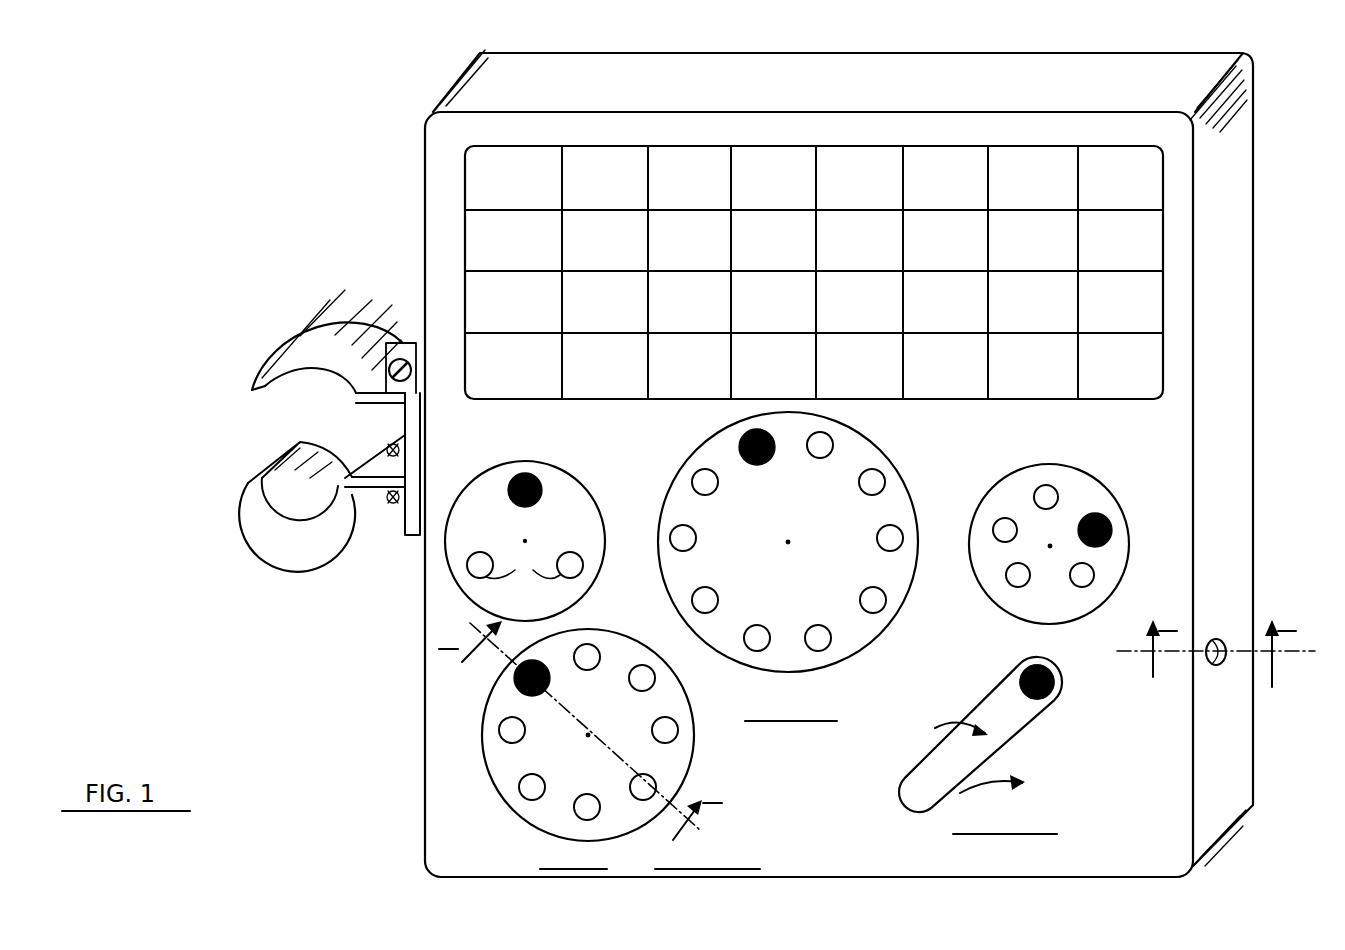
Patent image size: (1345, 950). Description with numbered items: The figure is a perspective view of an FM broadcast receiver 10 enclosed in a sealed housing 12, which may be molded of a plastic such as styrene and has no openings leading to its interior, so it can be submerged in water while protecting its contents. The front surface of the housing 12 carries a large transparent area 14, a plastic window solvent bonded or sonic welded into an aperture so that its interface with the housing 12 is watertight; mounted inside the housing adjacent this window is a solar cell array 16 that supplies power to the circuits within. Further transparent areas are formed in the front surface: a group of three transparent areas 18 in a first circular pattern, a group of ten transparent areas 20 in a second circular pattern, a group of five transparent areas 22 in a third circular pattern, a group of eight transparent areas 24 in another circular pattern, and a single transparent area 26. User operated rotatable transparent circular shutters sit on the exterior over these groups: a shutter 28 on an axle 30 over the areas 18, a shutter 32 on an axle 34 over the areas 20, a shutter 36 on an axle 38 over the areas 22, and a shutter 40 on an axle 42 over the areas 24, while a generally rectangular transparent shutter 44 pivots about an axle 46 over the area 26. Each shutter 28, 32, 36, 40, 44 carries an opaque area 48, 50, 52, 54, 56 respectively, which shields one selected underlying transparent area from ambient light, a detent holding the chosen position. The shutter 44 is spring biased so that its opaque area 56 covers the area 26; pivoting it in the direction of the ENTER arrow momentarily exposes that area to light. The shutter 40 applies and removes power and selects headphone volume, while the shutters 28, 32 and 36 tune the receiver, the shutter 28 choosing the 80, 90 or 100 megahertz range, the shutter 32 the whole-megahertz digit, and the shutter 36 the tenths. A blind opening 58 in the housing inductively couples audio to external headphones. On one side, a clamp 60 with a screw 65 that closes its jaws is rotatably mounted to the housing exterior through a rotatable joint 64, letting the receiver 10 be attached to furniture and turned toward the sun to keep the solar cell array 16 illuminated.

The receiver 10 is at (405, 805).
The housing 12 is at (1226, 68).
The transparent area 14 is at (466, 165).
The solar cell array 16 is at (1155, 246).
The transparent areas 18 is at (520, 508).
The transparent areas 20 is at (768, 480).
The transparent areas 22 is at (1040, 506).
The transparent areas 24 is at (598, 690).
The transparent area 26 is at (1052, 684).
The shutter 28 is at (588, 500).
The axle 30 is at (523, 540).
The shutter 32 is at (900, 516).
The axle 34 is at (787, 544).
The shutter 36 is at (1081, 491).
The axle 38 is at (1050, 548).
The shutter 40 is at (500, 765).
The axle 42 is at (588, 738).
The shutter 44 is at (1026, 732).
The axle 46 is at (945, 736).
The opaque area 48 is at (508, 492).
The opaque area 50 is at (742, 437).
The opaque area 52 is at (1110, 533).
The opaque area 54 is at (541, 680).
The opaque area 56 is at (1022, 688).
The blind opening 58 is at (1224, 660).
The clamp 60 is at (364, 303).
The rotatable joint 64 is at (422, 480).
The screw 65 is at (412, 367).
The dial scale mark 80 is at (444, 590).
The selected dial button 90 is at (525, 473).
The dial scale mark 100 is at (609, 590).